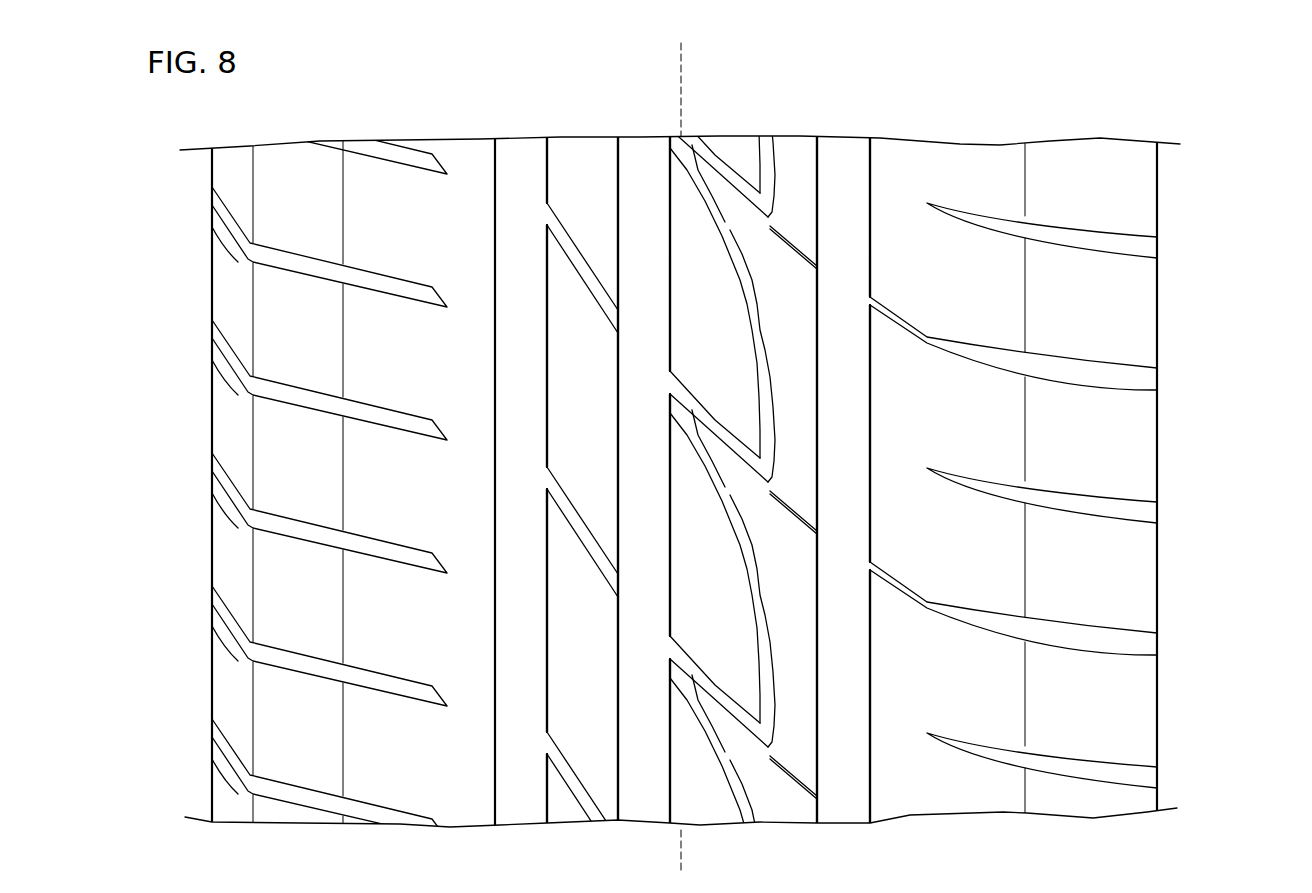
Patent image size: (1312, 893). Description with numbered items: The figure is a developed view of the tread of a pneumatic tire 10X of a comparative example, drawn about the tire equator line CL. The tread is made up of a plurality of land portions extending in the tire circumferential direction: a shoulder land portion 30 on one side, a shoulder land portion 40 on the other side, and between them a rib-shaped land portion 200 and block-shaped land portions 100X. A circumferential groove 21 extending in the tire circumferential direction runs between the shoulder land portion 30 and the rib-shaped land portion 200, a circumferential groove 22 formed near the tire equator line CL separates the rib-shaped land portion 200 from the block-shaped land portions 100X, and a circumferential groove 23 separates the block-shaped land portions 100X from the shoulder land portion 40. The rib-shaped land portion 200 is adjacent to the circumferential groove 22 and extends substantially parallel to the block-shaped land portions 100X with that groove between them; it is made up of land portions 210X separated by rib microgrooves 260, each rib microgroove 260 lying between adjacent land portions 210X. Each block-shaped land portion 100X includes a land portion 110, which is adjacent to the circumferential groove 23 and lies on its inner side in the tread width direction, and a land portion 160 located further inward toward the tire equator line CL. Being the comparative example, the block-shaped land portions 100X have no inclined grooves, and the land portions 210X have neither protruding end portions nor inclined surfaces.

The pneumatic tire 10X is at (1217, 80).
The tire equator line CL is at (683, 62).
The shoulder land portion 30 is at (344, 116).
The circumferential groove 21 is at (520, 150).
The rib-shaped land portion 200 is at (581, 116).
The land portion 210X is at (572, 365).
The rib microgroove 260 is at (578, 540).
The circumferential groove 22 is at (644, 148).
The block-shaped land portion 100X is at (753, 116).
The land portion 110 is at (790, 573).
The land portion 160 is at (710, 638).
The circumferential groove 23 is at (845, 147).
The shoulder land portion 40 is at (1020, 115).